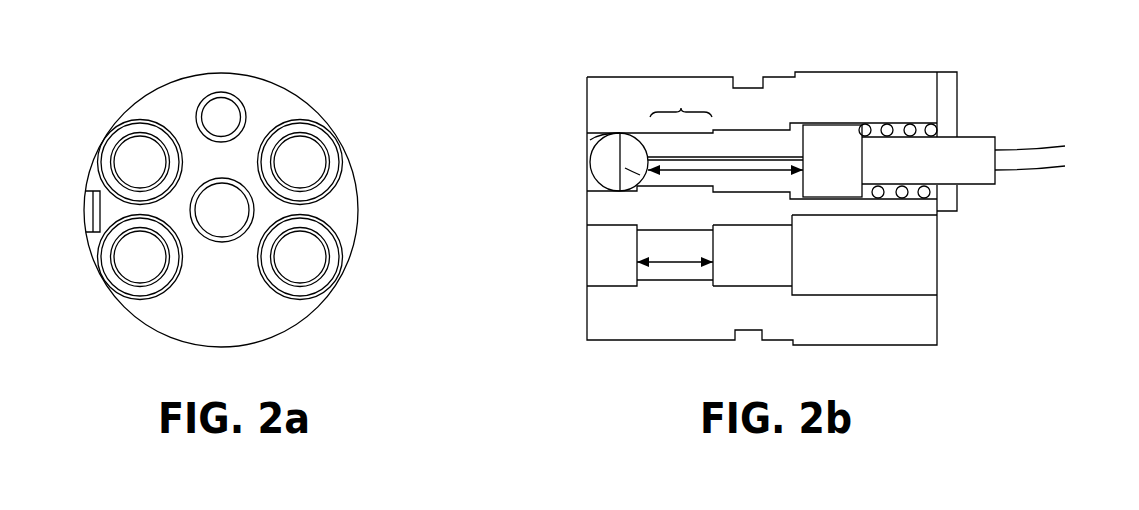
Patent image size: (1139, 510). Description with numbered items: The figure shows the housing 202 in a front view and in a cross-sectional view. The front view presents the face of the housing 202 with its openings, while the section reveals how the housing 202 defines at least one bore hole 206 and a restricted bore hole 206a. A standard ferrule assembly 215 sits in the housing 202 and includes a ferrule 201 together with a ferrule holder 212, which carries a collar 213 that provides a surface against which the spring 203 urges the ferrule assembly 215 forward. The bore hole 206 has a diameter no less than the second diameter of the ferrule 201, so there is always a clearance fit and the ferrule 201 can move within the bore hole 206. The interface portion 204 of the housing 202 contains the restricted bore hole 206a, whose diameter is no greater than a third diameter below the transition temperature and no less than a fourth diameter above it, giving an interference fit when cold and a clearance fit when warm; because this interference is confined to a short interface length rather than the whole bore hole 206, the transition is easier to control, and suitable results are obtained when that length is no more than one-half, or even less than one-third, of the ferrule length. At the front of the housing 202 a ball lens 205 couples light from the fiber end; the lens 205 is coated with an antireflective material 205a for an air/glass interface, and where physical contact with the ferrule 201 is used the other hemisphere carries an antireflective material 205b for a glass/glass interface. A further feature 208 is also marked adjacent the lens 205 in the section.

In FIG. 2b, the ferrule 201 is at (747, 152).
In FIG. 2a, the housing 202 is at (168, 105).
In FIG. 2b, the housing 202 is at (587, 105).
In FIG. 2b, the spring 203 is at (918, 126).
In FIG. 2b, the interface portion 204 is at (681, 108).
In FIG. 2b, the lens 205 is at (591, 152).
In FIG. 2b, the antireflective material 205a is at (602, 168).
In FIG. 2b, the antireflective material for glass/glass interface 205b is at (632, 173).
In FIG. 2a, the bore hole 206 is at (135, 257).
In FIG. 2b, the bore hole 206 is at (905, 263).
In FIG. 2b, the restricted bore hole 206a is at (667, 263).
In FIG. 2b, the ball seat 208 is at (641, 130).
In FIG. 2b, the ferrule holder 212 is at (975, 136).
In FIG. 2b, the collar 213 is at (872, 126).
In FIG. 2b, the ferrule assembly 215 is at (826, 125).